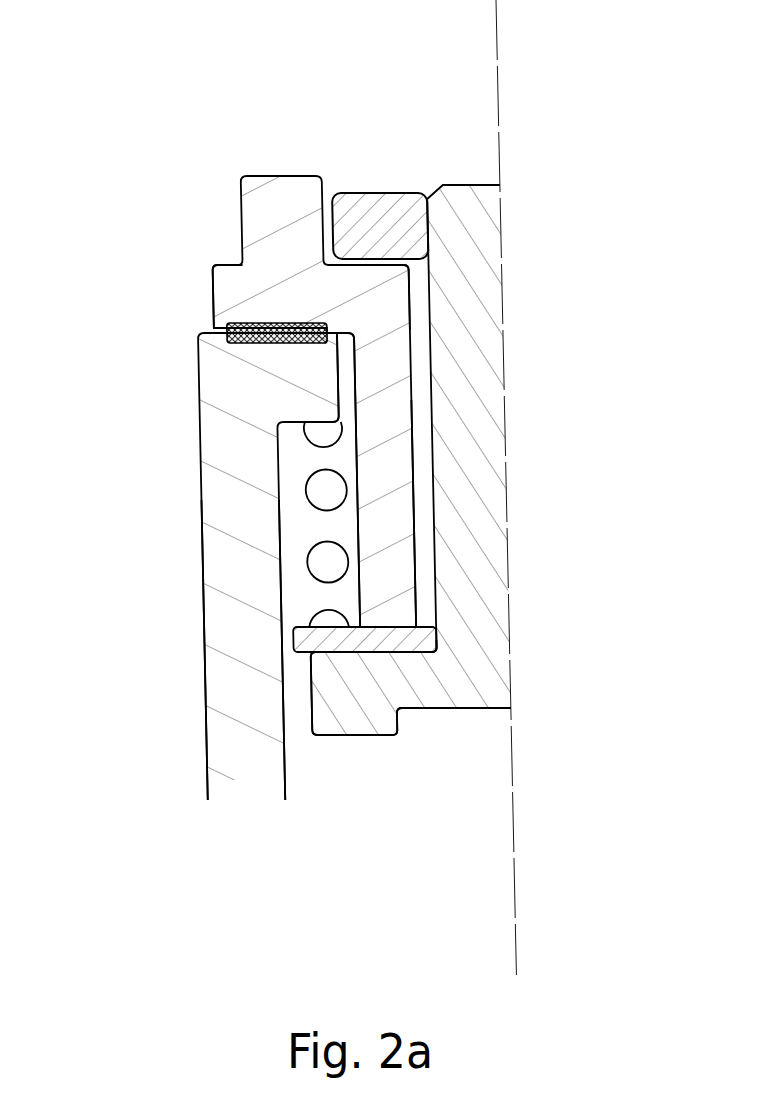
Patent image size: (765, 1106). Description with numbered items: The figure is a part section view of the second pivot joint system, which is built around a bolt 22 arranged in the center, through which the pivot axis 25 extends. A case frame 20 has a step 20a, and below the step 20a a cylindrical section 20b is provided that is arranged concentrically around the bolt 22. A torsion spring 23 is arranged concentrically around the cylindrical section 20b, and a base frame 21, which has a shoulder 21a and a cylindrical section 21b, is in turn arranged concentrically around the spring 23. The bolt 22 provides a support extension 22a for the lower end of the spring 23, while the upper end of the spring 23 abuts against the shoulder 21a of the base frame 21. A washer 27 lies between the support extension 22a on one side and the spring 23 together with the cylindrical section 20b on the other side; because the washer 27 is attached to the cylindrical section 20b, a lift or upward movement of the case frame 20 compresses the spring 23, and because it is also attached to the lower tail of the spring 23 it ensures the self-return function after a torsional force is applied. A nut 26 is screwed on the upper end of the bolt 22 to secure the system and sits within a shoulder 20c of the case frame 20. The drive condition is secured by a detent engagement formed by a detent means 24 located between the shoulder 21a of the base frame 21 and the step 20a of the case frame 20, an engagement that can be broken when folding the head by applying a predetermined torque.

The case frame 20 is at (297, 241).
The step 20a is at (327, 300).
The cylindrical section 20b is at (393, 505).
The shoulder 20c is at (365, 270).
The base frame 21 is at (258, 656).
The shoulder 21a is at (300, 383).
The cylindrical section 21b is at (238, 705).
The bolt 22 is at (485, 464).
The support extension 22a is at (385, 678).
The torsion spring 23 is at (327, 493).
The detent means 24 is at (227, 327).
The pivot axis 25 is at (500, 115).
The nut 26 is at (383, 228).
The washer 27 is at (380, 636).